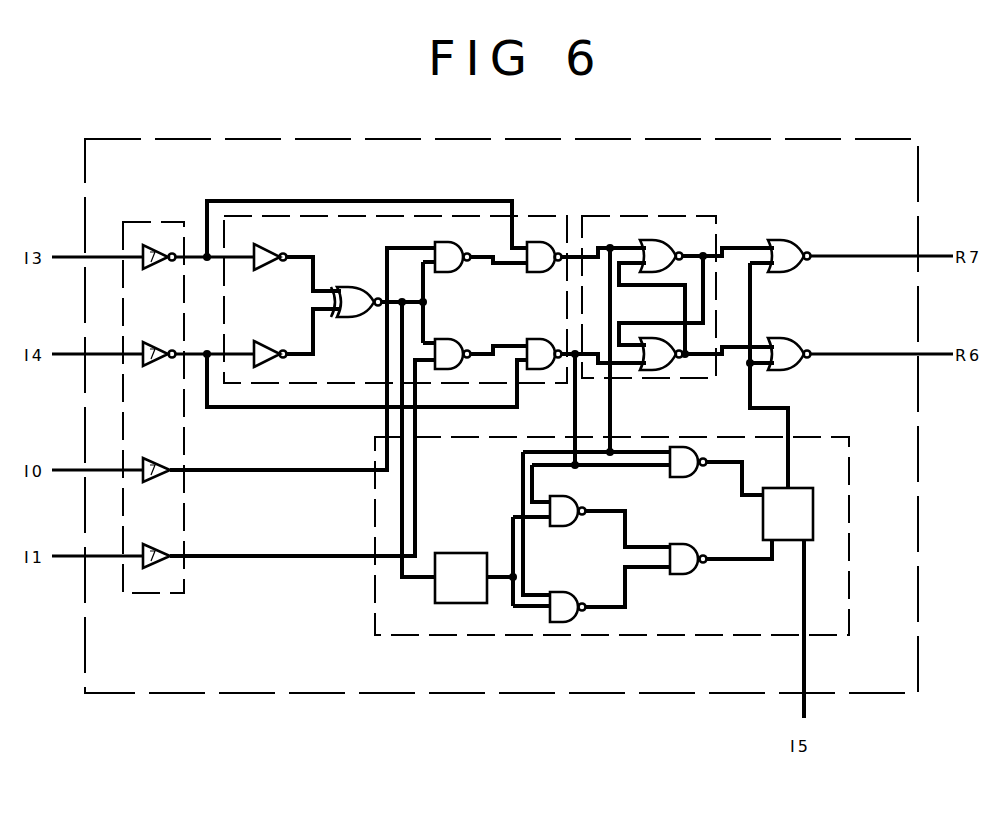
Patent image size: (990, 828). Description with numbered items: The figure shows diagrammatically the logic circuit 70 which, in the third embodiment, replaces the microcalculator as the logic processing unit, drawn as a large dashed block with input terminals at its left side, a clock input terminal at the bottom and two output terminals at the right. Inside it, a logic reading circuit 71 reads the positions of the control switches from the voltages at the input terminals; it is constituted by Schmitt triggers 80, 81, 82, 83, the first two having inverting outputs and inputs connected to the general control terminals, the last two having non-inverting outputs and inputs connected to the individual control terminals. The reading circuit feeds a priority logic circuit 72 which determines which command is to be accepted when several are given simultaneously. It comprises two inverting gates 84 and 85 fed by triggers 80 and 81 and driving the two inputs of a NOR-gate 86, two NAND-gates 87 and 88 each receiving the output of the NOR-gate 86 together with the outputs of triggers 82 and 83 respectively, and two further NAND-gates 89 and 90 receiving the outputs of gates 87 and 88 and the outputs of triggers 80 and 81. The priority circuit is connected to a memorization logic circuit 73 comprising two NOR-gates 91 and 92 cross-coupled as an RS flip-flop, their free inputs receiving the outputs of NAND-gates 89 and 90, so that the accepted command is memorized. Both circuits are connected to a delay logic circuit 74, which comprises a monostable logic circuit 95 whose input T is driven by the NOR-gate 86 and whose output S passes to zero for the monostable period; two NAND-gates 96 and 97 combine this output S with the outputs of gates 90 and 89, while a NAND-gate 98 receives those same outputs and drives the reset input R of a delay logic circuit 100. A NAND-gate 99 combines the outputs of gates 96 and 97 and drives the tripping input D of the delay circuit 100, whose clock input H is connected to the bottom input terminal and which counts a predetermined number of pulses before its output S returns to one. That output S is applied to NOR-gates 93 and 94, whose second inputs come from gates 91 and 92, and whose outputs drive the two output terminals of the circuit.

The logic circuit 70 is at (227, 693).
The logic reading circuit 71 is at (160, 222).
The priority logic circuit 72 is at (540, 216).
The memorization logic circuit 73 is at (698, 216).
The delay logic circuit 74 is at (530, 635).
The Schmitt trigger 80 is at (146, 266).
The Schmitt trigger 81 is at (146, 363).
The Schmitt trigger 82 is at (157, 480).
The Schmitt trigger 83 is at (148, 566).
The inverting gate 84 is at (280, 250).
The inverting gate 85 is at (280, 347).
The NOR-gate 86 is at (345, 292).
The NAND-gate 87 is at (444, 273).
The NAND-gate 88 is at (476, 326).
The NAND-gate 89 is at (535, 273).
The NAND-gate 90 is at (536, 339).
The NOR-gate 91 is at (650, 240).
The NOR-gate 92 is at (652, 338).
The NOR-gate 93 is at (780, 240).
The NOR-gate 94 is at (784, 338).
The monostable logic circuit 95 is at (474, 553).
The NAND-gate 96 is at (584, 486).
The NAND-gate 97 is at (553, 592).
The NAND-gate 98 is at (672, 478).
The NAND-gate 99 is at (678, 575).
The delay logic circuit 100 is at (785, 540).